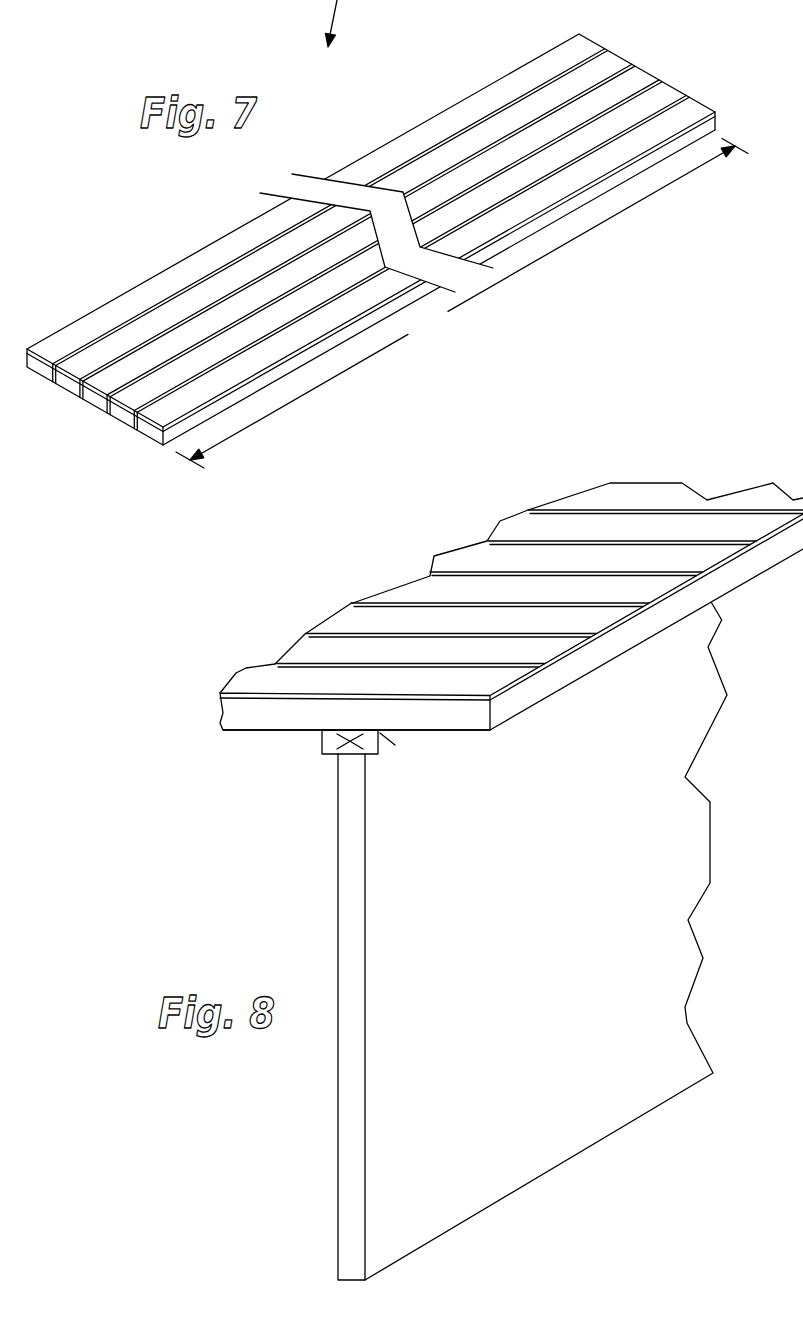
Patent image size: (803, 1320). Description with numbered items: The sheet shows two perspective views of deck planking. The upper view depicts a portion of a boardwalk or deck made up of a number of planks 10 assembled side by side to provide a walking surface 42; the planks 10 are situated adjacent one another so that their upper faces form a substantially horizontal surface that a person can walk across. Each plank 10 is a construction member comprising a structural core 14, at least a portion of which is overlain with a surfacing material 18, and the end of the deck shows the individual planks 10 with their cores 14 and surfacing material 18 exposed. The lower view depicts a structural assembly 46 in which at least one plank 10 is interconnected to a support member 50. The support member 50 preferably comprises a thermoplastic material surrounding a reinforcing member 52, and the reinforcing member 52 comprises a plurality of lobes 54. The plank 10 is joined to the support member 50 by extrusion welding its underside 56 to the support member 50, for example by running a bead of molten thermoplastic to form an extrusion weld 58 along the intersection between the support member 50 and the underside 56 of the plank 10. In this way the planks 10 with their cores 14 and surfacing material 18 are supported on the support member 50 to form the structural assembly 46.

In FIG. 7, the plank 10 is at (492, 163).
In FIG. 8, the plank 10 is at (445, 589).
In FIG. 7, the structural core 14 is at (357, 281).
In FIG. 8, the structural core 14 is at (475, 625).
In FIG. 7, the surfacing material 18 is at (53, 372).
In FIG. 8, the surfacing material 18 is at (457, 693).
In FIG. 7, the walking surface 42 is at (374, 281).
In FIG. 8, the structural assembly 46 is at (475, 849).
In FIG. 8, the support member 50 is at (361, 1041).
In FIG. 8, the reinforcing member 52 is at (360, 797).
In FIG. 8, the lobes 54 is at (340, 733).
In FIG. 8, the underside of plank 56 is at (273, 733).
In FIG. 8, the extrusion weld 58 is at (318, 731).